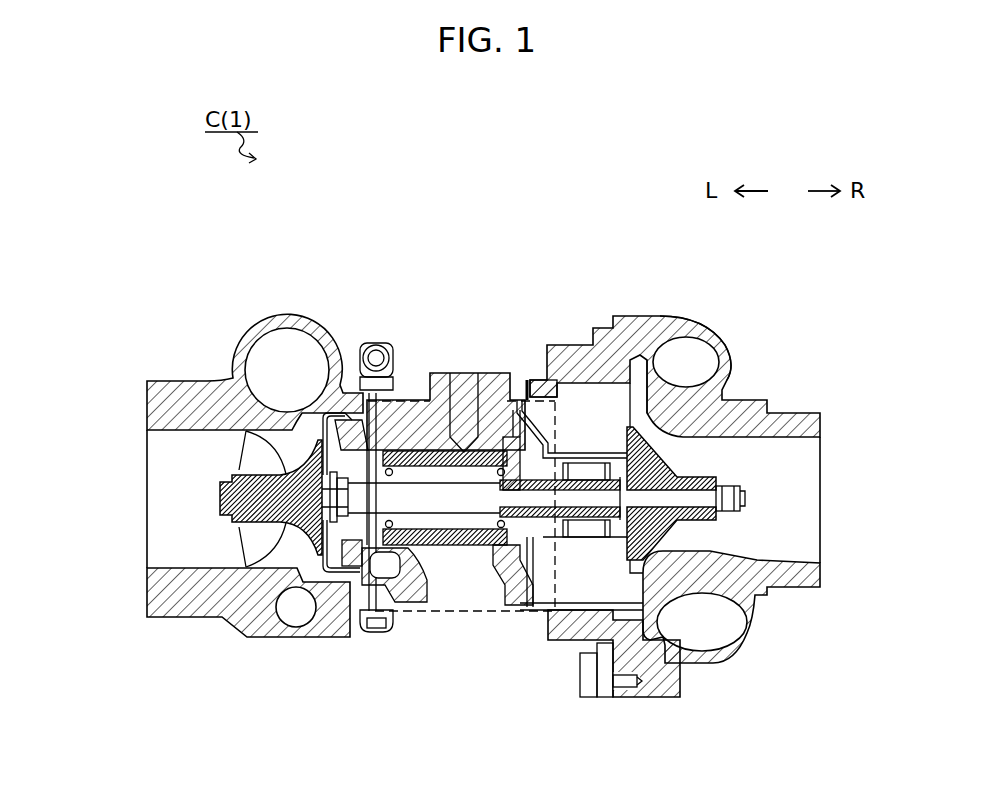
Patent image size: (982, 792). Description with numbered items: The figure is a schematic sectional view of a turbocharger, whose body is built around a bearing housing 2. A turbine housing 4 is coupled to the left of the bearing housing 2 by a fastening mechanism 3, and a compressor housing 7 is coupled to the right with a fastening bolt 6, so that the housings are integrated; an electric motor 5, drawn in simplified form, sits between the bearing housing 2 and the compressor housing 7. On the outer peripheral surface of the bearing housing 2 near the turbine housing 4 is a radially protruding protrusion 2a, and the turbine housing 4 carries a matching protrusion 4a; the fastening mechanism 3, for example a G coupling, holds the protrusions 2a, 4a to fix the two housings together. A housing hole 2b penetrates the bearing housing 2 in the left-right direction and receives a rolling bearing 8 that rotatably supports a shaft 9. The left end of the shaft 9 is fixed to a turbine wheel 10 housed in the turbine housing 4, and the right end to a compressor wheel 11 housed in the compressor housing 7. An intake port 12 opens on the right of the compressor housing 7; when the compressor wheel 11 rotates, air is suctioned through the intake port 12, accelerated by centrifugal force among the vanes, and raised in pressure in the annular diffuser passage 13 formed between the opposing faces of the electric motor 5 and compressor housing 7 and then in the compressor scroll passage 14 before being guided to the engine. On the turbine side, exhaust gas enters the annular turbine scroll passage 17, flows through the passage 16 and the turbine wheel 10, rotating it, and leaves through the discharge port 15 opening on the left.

The bearing housing 2 is at (471, 531).
The protrusion 2a is at (383, 633).
The housing hole 2b is at (425, 523).
The fastening mechanism 3 is at (411, 343).
The turbine housing 4 is at (209, 441).
The protrusion 4a is at (370, 633).
The electric motor 5 is at (675, 338).
The fastening bolt 6 is at (580, 697).
The compressor housing 7 is at (727, 355).
The rolling bearing 8 is at (497, 440).
The shaft 9 is at (468, 502).
The turbine wheel 10 is at (247, 553).
The compressor wheel 11 is at (705, 467).
The intake port 12 is at (748, 550).
The diffuser passage 13 is at (617, 342).
The compressor scroll passage 14 is at (698, 342).
The discharge port 15 is at (150, 450).
The passage 16 is at (310, 410).
The turbine scroll passage 17 is at (284, 333).